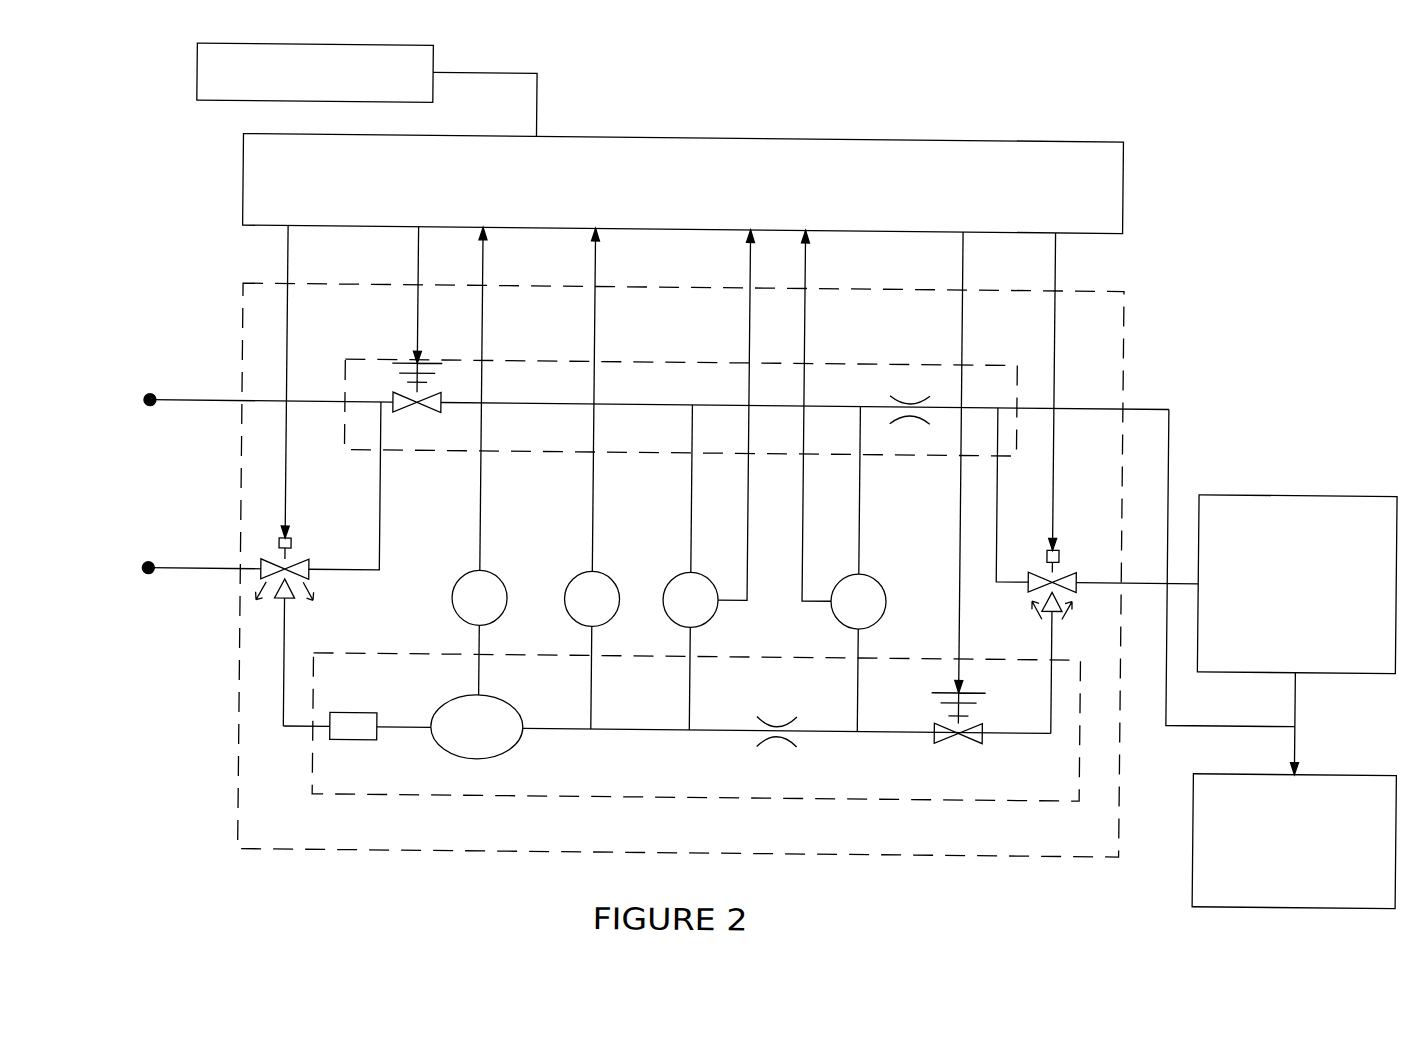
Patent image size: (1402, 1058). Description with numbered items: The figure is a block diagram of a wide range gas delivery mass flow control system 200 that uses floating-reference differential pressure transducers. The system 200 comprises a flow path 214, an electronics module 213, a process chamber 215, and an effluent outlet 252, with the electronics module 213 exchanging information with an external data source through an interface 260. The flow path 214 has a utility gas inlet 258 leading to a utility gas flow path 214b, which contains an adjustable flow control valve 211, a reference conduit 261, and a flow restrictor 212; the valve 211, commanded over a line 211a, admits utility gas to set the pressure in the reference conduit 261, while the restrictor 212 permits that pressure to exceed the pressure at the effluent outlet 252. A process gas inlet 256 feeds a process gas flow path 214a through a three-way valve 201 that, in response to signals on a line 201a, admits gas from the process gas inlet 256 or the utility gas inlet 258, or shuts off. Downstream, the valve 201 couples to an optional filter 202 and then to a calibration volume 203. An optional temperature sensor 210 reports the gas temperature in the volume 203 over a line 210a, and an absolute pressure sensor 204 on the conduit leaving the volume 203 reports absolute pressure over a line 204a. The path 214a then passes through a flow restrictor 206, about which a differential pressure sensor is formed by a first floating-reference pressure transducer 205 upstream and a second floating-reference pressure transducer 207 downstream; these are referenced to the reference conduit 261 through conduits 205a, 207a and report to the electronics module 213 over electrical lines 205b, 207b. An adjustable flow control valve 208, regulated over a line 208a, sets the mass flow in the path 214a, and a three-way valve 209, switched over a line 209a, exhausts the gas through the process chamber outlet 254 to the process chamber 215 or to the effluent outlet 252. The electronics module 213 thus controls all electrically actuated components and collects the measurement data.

The gas flow system 200 is at (1209, 192).
The three-way valve 201 is at (298, 556).
The line 201a is at (286, 342).
The filter 202 is at (355, 743).
The calibration volume 203 is at (480, 762).
The absolute pressure sensor 204 is at (568, 586).
The line 204a is at (593, 323).
The first floating-reference pressure transducer 205 is at (669, 585).
The conduit 205a is at (692, 480).
The electrical line 205b is at (748, 318).
The flow restrictor 206 is at (777, 751).
The second floating-reference pressure transducer 207 is at (880, 617).
The conduit 207a is at (860, 516).
The electrical line 207b is at (803, 324).
The adjustable flow control valve 208 is at (960, 743).
The line 208a is at (960, 324).
The three-way valve 209 is at (1063, 566).
The line 209a is at (1053, 274).
The temperature sensor 210 is at (453, 589).
The line 210a is at (480, 322).
The adjustable flow control valve 211 is at (416, 418).
The line 211a is at (416, 261).
The flow restrictor 212 is at (899, 425).
The electronics module 213 is at (1083, 218).
The flow path 214 is at (240, 714).
The process gas flow path 214a is at (545, 794).
The utility gas flow path 214b is at (832, 361).
The process chamber 215 is at (1369, 642).
The effluent outlet 252 is at (1318, 865).
The process chamber outlet 254 is at (1138, 579).
The process gas inlet 256 is at (201, 578).
The utility gas inlet 258 is at (199, 410).
The interface 260 is at (248, 105).
The reference conduit 261 is at (721, 403).